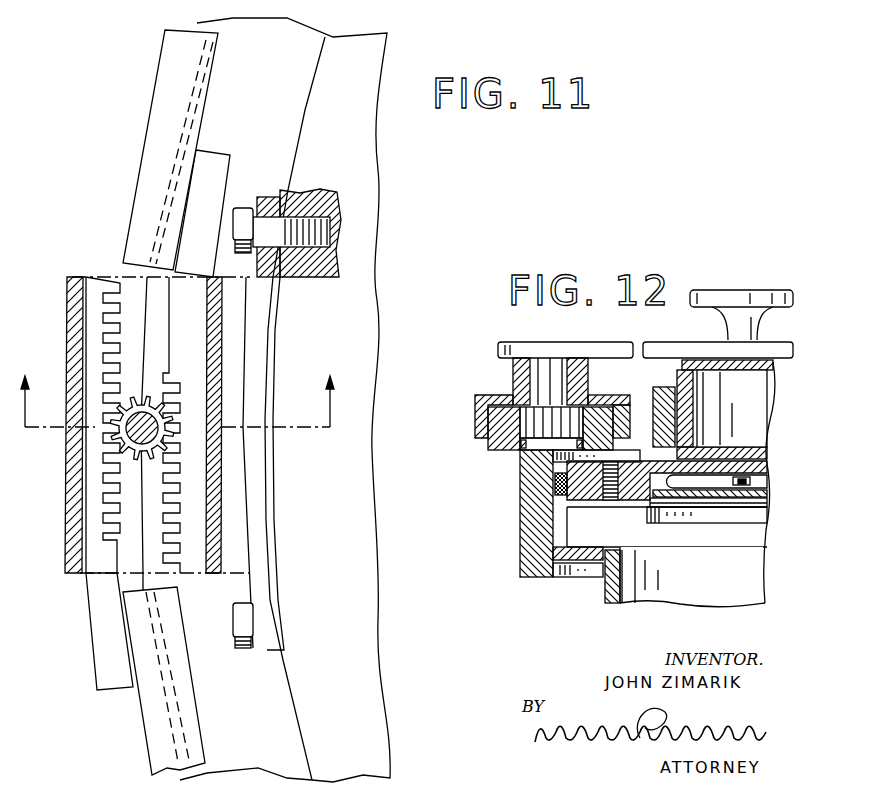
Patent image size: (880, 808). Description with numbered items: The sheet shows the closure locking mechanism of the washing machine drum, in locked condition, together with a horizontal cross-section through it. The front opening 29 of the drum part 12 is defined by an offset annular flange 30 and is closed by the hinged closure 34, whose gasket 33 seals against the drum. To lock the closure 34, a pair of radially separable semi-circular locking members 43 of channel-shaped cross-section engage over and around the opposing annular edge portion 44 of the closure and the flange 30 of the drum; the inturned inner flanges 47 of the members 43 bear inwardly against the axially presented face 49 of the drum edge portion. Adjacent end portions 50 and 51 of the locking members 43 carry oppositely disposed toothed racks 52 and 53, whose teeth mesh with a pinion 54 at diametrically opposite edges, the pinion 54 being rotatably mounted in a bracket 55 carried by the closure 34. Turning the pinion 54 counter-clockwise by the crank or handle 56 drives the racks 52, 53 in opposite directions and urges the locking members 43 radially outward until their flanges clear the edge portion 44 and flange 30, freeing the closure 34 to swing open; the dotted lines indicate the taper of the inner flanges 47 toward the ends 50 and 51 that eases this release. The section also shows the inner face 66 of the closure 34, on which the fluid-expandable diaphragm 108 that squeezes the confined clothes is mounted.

In FIG. 11, the drum part 12 is at (185, 425).
In FIG. 12, the drum part 12 is at (607, 603).
In FIG. 12, the front opening 29 is at (560, 538).
In FIG. 12, the offset annular flange 30 is at (553, 533).
In FIG. 12, the gasket 33 is at (554, 499).
In FIG. 11, the closure 34 is at (360, 138).
In FIG. 12, the closure 34 is at (676, 390).
In FIG. 11, the locking members 43 is at (143, 135).
In FIG. 11, the annular edge portion 44 is at (143, 545).
In FIG. 12, the annular edge portion 44 is at (552, 476).
In FIG. 11, the inner flanges 47 is at (190, 105).
In FIG. 12, the face 49 is at (593, 575).
In FIG. 11, the end portion 50 is at (135, 226).
In FIG. 11, the end portion 51 is at (137, 607).
In FIG. 11, the toothed rack 52 is at (192, 370).
In FIG. 12, the toothed rack 52 is at (590, 397).
In FIG. 11, the toothed rack 53 is at (72, 325).
In FIG. 12, the toothed rack 53 is at (518, 450).
In FIG. 11, the pinion 54 is at (130, 462).
In FIG. 12, the pinion 54 is at (520, 458).
In FIG. 11, the bracket 55 is at (68, 294).
In FIG. 12, the bracket 55 is at (475, 402).
In FIG. 12, the crank or handle 56 is at (620, 347).
In FIG. 12, the inner face 66 is at (632, 508).
In FIG. 12, the fluid-expandable diaphragm 108 is at (758, 490).